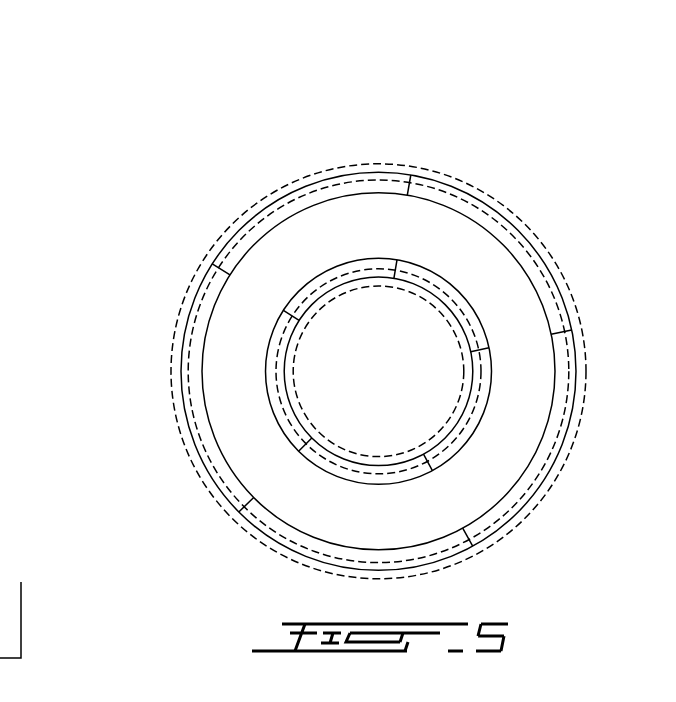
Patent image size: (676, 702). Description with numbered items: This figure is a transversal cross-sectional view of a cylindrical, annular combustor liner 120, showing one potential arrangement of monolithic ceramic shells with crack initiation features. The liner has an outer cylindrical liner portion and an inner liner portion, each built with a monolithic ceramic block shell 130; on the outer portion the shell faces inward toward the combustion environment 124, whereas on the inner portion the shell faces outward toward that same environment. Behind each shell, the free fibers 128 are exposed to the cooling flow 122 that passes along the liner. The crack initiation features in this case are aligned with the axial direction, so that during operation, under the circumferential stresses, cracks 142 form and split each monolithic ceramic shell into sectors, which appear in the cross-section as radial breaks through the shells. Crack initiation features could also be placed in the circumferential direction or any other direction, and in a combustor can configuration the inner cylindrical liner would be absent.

The combustor liner 120 is at (146, 153).
The cooling flow 122 is at (427, 350).
The combustion environment 124 is at (510, 427).
The free fibers 128 is at (432, 287).
The monolithic ceramic block shell 130 is at (481, 302).
The cracks 142 is at (386, 257).